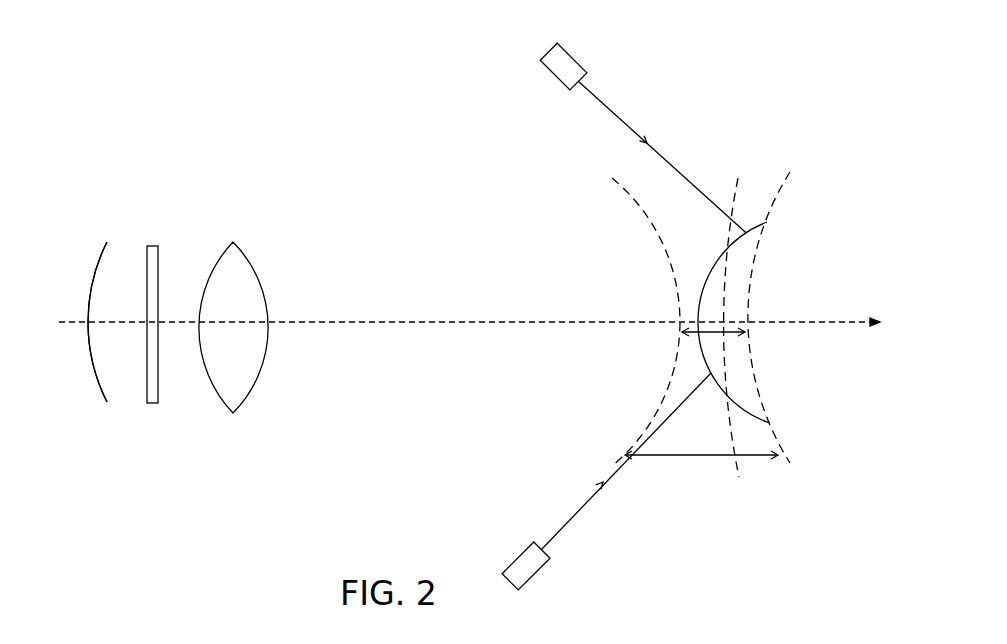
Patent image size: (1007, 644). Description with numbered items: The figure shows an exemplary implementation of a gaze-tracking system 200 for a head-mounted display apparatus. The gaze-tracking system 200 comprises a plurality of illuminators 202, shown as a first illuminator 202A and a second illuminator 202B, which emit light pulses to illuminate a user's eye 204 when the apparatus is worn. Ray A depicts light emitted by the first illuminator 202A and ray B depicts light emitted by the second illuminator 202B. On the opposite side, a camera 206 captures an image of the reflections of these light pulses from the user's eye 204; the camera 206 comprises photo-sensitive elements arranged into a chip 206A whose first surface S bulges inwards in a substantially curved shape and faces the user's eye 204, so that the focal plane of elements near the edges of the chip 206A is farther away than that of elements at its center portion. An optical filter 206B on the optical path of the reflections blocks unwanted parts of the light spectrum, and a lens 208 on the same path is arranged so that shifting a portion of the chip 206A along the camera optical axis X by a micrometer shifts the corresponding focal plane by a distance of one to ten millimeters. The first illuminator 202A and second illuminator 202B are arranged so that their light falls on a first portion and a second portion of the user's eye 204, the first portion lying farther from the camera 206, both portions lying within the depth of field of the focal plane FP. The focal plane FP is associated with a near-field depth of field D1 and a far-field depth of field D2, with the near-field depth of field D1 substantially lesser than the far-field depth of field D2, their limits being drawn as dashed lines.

The gaze-tracking system 200 is at (782, 120).
The plurality of illuminators 202 is at (518, 63).
The first illuminator 202A is at (578, 64).
The second illuminator 202B is at (536, 574).
The user's eye 204 is at (765, 224).
The camera 206 is at (52, 182).
The chip 206A is at (101, 253).
The optical filter 206B is at (155, 243).
The lens 208 is at (255, 273).
The ray A is at (616, 114).
The ray B is at (575, 514).
The first surface S is at (100, 397).
The camera optical axis X is at (447, 322).
The focal plane FP is at (738, 316).
The near-field depth of field D1 is at (729, 336).
The far-field depth of field D2 is at (701, 466).